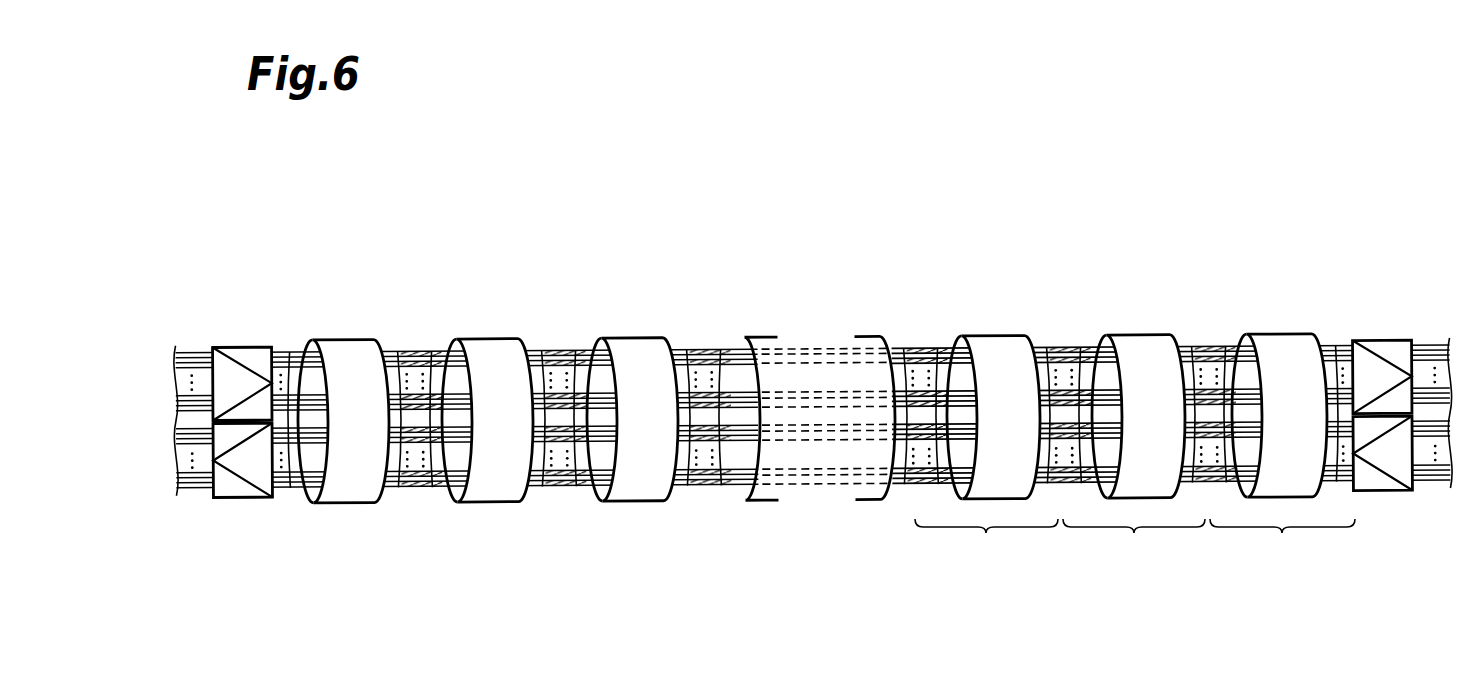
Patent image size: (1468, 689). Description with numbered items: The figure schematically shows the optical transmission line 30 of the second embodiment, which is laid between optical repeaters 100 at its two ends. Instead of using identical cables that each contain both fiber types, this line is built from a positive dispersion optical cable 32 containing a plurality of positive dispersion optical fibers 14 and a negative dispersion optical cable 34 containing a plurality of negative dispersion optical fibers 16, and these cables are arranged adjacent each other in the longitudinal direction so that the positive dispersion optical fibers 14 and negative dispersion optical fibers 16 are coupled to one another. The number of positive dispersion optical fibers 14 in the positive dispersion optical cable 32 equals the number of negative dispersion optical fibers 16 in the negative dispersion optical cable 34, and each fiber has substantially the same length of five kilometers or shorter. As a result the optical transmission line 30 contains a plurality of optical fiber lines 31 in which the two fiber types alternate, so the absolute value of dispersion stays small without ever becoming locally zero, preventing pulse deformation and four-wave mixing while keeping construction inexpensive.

The positive dispersion optical fiber 14 is at (932, 350).
The negative dispersion optical fiber 16 is at (1076, 348).
The optical transmission line 30 is at (1197, 198).
The optical fiber line 31 is at (430, 352).
The positive dispersion optical cable 32 is at (1135, 545).
The negative dispersion optical cable 34 is at (1134, 545).
The optical repeater 100 is at (238, 346).